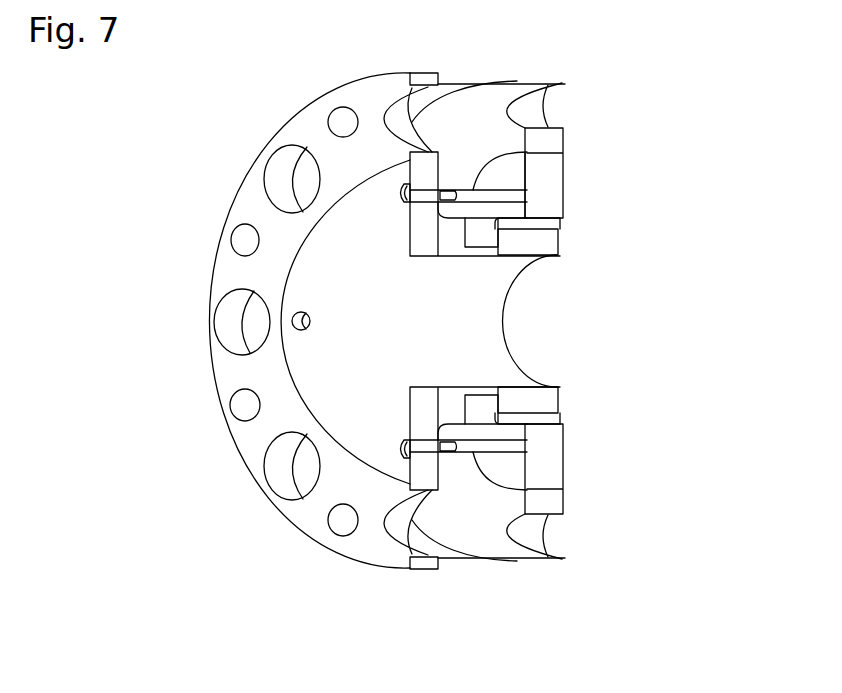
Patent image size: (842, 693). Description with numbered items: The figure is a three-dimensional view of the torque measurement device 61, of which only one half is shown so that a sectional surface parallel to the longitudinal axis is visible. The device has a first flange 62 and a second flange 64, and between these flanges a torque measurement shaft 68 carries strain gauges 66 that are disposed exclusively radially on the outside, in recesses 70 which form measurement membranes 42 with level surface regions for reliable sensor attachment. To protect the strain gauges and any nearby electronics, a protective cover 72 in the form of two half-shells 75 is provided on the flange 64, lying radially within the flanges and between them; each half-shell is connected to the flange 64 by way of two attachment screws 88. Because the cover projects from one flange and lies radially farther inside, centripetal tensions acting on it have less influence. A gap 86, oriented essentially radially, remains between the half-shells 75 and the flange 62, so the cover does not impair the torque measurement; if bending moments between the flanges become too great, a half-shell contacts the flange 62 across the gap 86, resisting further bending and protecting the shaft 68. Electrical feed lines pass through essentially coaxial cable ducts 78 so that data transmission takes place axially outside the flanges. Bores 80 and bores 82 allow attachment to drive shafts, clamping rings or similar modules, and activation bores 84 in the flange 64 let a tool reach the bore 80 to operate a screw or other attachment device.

The torque measurement device 61 is at (226, 148).
The first flange 62 is at (550, 140).
The second flange 64 is at (260, 438).
The strain gauges 66 is at (480, 247).
The torque measurement shaft 68 is at (452, 403).
The recesses 70 is at (483, 410).
The protective cover 72 is at (472, 452).
The half-shells 75 is at (500, 156).
The cable ducts 78 is at (558, 418).
The bores 80 is at (545, 538).
The bores 82 is at (242, 235).
The activation bores 84 is at (243, 320).
The gap 86 is at (519, 172).
The attachment screws 88 is at (390, 192).
The measurement membranes 42 is at (480, 387).